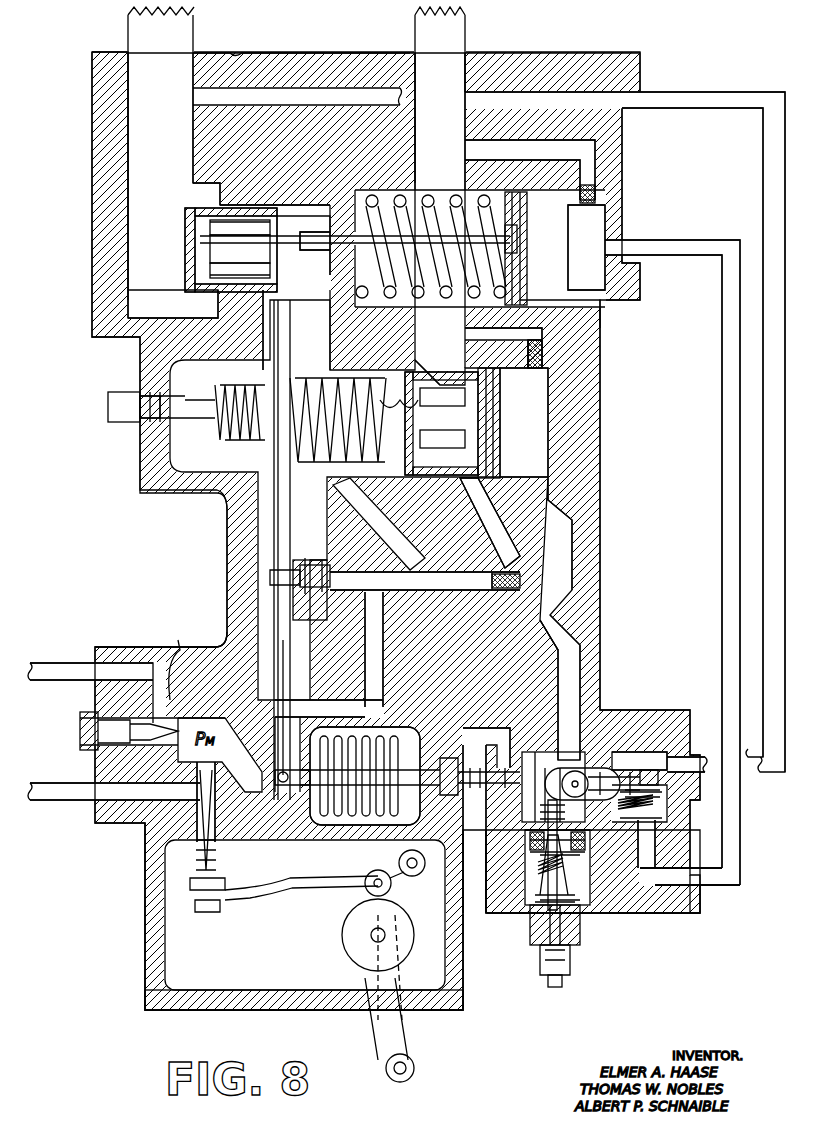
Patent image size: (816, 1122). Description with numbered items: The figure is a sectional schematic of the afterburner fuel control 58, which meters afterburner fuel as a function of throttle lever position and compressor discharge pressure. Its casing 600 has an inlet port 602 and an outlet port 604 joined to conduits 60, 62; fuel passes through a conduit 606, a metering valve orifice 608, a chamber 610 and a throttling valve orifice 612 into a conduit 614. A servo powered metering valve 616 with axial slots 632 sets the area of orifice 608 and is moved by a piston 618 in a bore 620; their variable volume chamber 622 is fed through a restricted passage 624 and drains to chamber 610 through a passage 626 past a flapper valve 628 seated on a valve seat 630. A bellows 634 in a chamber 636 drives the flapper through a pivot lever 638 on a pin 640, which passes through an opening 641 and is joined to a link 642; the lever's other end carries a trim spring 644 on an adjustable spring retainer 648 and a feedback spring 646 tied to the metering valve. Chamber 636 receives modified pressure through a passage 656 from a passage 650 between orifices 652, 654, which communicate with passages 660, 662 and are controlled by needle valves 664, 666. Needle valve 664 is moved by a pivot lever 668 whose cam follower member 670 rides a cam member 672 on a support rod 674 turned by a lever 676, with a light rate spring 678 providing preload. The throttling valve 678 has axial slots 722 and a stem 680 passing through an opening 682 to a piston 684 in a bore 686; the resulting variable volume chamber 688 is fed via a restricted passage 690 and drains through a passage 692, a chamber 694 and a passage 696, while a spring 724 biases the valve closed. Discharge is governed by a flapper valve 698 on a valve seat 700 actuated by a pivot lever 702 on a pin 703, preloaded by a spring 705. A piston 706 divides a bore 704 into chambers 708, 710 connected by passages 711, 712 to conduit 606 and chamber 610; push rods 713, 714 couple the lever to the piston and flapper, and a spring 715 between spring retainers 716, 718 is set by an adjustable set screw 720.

The afterburner fuel control 58 is at (632, 54).
The conduit 60 is at (468, 32).
The conduit 62 is at (195, 38).
The casing 600 is at (325, 75).
The inlet port 602 is at (470, 78).
The outlet port 604 is at (200, 70).
The conduit 606 is at (455, 140).
The metering valve orifice 608 is at (435, 363).
The chamber 610 is at (310, 358).
The throttling valve orifice 612 is at (218, 303).
The conduit 614 is at (128, 172).
The servo powered metering valve 616 is at (408, 398).
The piston 618 is at (495, 440).
The bore 620 is at (522, 478).
The variable volume chamber 622 is at (540, 399).
The restricted passage 624 is at (540, 332).
The passage 626 is at (562, 538).
The flapper valve 628 is at (314, 560).
The valve seat 630 is at (299, 590).
The axial slots 632 is at (432, 455).
The bellows 634 is at (355, 828).
The chamber 636 is at (315, 835).
The pivot lever 638 is at (275, 612).
The pin 640 is at (287, 790).
The opening 641 is at (331, 659).
The link 642 is at (280, 785).
The trim spring 644 is at (220, 445).
The feedback spring 646 is at (320, 468).
The adjustable spring retainer 648 is at (120, 420).
The passage 650 is at (182, 718).
The orifice 652 is at (200, 790).
The orifice 654 is at (170, 710).
The passage 656 is at (233, 644).
The passage 660 is at (68, 800).
The passage 662 is at (104, 663).
The needle valve 664 is at (165, 862).
The needle valve 666 is at (80, 738).
The pivot lever 668 is at (287, 890).
The cam follower member 670 is at (368, 890).
The cam member 672 is at (352, 958).
The support rod 674 is at (370, 936).
The lever 676 is at (408, 1040).
The throttling valve 678 is at (185, 230).
The throttling valve stem 680 is at (292, 260).
The opening 682 is at (330, 270).
The piston 684 is at (518, 220).
The bore 686 is at (560, 318).
The variable volume chamber 688 is at (590, 283).
The restricted passage 690 is at (570, 150).
The passage 692 is at (700, 245).
The chamber 694 is at (640, 755).
The passage 696 is at (722, 100).
The flapper valve 698 is at (662, 808).
The valve seat 700 is at (660, 830).
The pivot lever 702 is at (598, 778).
The pin 703 is at (578, 775).
The bore 704 is at (610, 913).
The spring 705 is at (660, 795).
The piston 706 is at (502, 818).
The variable volume chamber 708 is at (548, 785).
The variable volume chamber 710 is at (527, 858).
The passage 711 is at (568, 632).
The passage 712 is at (537, 870).
The push rod 713 is at (545, 783).
The push rod 714 is at (680, 757).
The spring 715 is at (530, 888).
The spring retainer 716 is at (610, 878).
The spring retainer 718 is at (532, 940).
The adjustable set screw 720 is at (560, 985).
The axial slots 722 is at (210, 238).
The spring 724 is at (430, 195).